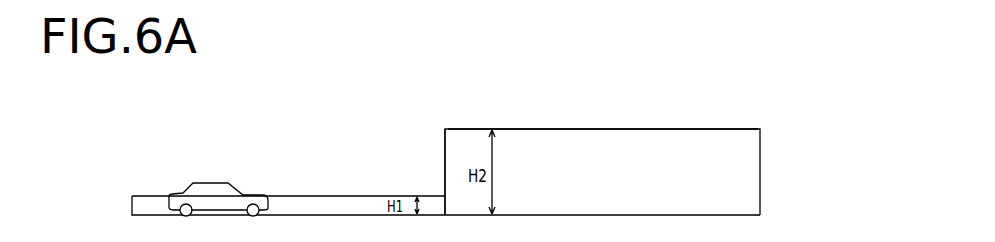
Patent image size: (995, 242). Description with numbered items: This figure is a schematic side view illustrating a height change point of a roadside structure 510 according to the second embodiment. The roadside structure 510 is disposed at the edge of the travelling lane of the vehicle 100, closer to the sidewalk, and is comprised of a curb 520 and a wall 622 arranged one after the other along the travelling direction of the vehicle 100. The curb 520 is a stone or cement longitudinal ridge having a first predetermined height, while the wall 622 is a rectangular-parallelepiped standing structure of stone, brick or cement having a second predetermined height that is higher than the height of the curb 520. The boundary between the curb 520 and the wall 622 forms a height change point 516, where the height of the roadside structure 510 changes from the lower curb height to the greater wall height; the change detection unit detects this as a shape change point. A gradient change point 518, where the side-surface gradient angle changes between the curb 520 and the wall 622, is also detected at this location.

The vehicle 100 is at (215, 182).
The roadside structure 510 is at (506, 68).
The height change point 516 is at (443, 168).
The gradient change point 518 is at (444, 168).
The curb 520 is at (353, 195).
The wall 622 is at (615, 118).